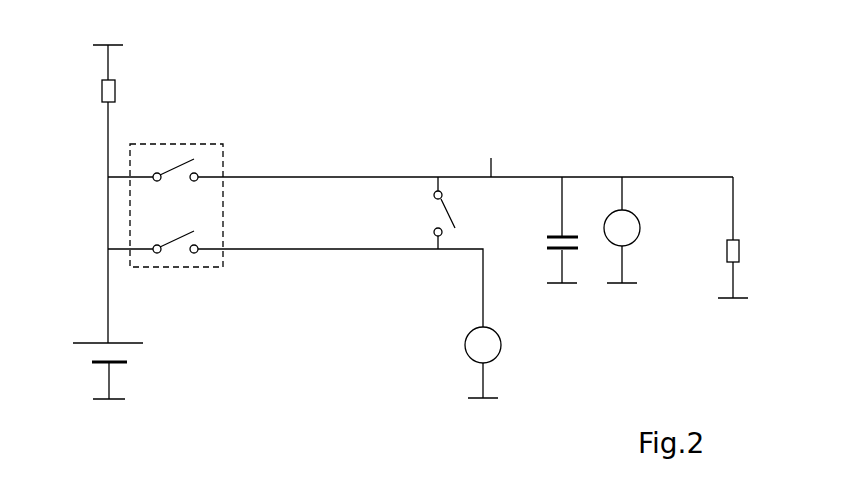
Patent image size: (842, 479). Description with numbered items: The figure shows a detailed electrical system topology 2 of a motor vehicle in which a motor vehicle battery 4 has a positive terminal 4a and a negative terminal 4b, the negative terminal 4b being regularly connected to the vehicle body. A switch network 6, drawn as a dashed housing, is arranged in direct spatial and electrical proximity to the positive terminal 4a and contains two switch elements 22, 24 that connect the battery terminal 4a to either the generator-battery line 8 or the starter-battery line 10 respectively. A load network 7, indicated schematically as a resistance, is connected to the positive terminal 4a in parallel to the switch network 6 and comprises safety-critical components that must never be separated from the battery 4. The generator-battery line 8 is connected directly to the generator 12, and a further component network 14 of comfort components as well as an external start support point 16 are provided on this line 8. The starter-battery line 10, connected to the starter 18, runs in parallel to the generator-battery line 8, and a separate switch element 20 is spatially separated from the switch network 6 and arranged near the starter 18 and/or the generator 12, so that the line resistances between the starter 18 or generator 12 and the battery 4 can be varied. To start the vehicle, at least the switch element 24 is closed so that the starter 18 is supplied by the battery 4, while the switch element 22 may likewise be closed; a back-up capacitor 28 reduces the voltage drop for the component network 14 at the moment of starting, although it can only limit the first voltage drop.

The electrical system topology 2 is at (621, 142).
The motor vehicle battery 4 is at (82, 362).
The positive terminal 4a is at (73, 344).
The negative terminal 4b is at (97, 364).
The switch network 6 is at (158, 143).
The load network 7 is at (102, 90).
The generator-battery line 8 is at (340, 176).
The starter-battery line 10 is at (333, 251).
The generator 12 is at (641, 232).
The component network 14 is at (740, 246).
The external start support point 16 is at (493, 165).
The starter 18 is at (502, 352).
The switch element 20 is at (430, 212).
The switch element 22 is at (178, 170).
The switch element 24 is at (178, 253).
The back-up capacitor 28 is at (548, 236).